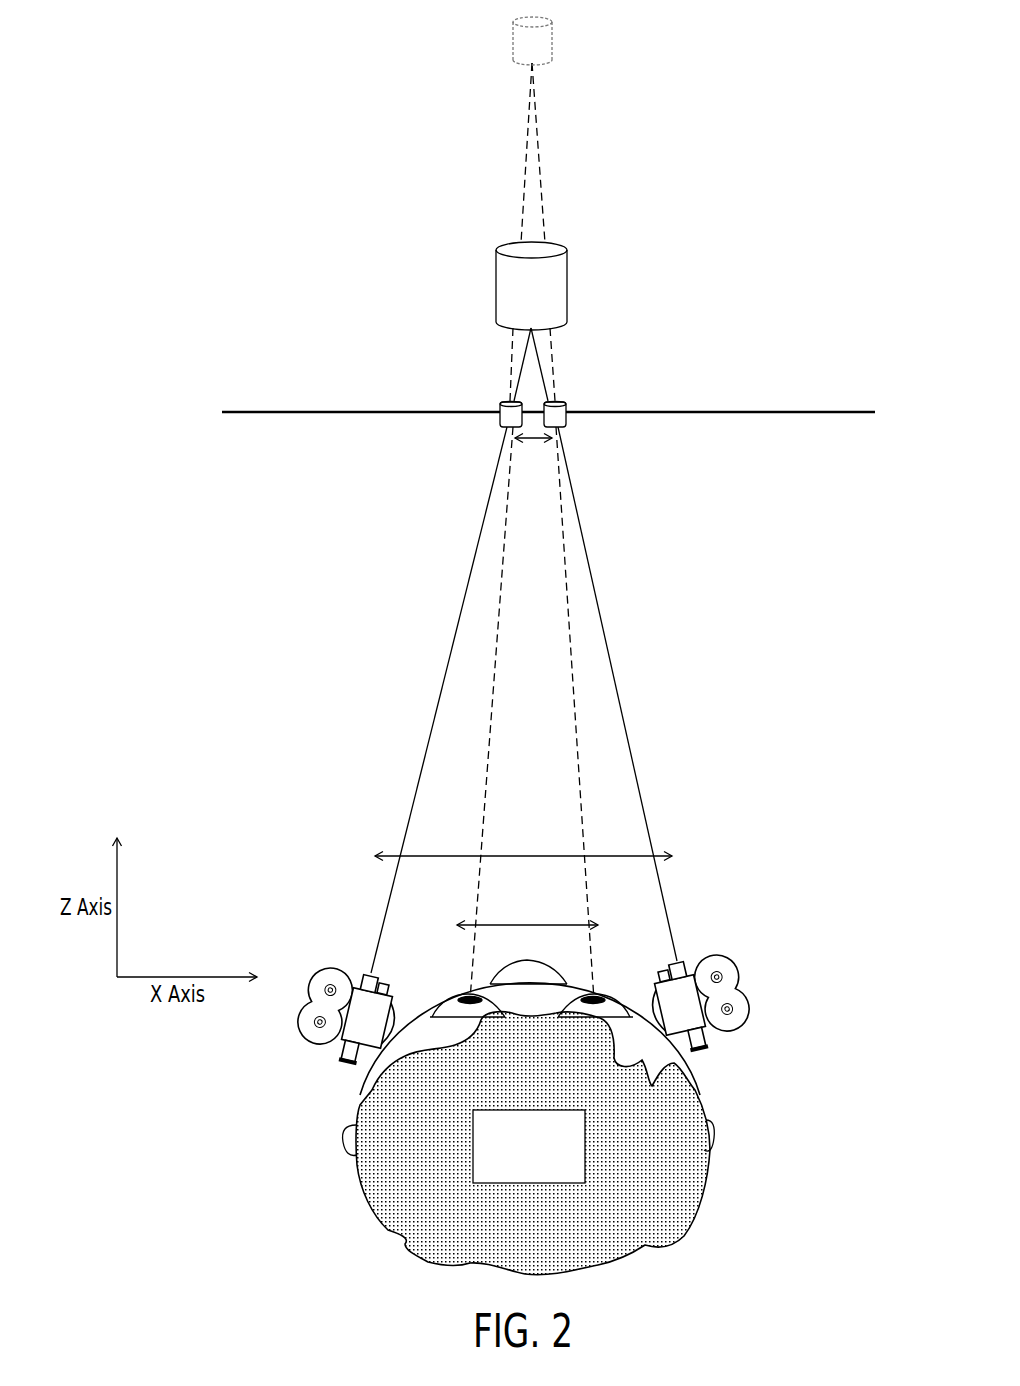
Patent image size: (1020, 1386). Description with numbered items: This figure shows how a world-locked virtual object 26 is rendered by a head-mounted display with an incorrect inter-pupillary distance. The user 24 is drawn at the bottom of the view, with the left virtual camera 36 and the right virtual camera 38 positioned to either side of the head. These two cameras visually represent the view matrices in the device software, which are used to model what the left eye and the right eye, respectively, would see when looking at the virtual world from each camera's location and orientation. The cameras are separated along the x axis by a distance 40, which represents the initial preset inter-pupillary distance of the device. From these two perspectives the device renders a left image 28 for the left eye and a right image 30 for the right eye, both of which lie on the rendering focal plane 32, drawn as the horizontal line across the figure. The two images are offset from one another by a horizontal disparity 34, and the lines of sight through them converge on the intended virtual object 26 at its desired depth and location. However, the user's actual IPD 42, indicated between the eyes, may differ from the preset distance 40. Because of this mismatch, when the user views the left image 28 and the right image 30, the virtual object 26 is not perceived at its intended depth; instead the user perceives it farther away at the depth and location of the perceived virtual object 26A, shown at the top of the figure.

The user 24 is at (529, 1117).
The virtual object 26 is at (585, 284).
The perceived virtual object 26A is at (558, 37).
The left image 28 is at (497, 421).
The right image 30 is at (569, 423).
The rendering focal plane 32 is at (722, 398).
The horizontal disparity 34 is at (533, 456).
The left virtual camera 36 is at (302, 1058).
The right virtual camera 38 is at (757, 1033).
The distance 40 is at (523, 840).
The actual IPD 42 is at (527, 910).